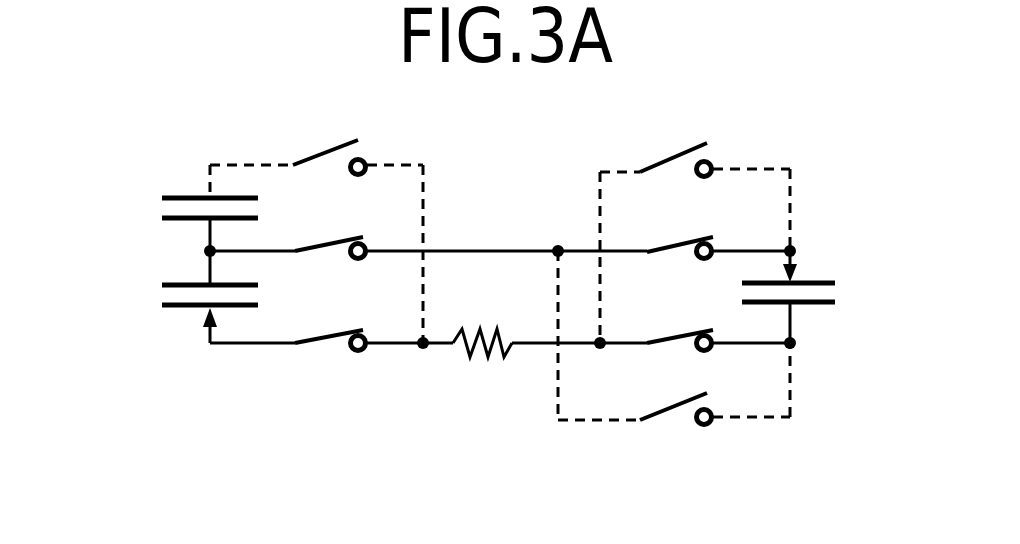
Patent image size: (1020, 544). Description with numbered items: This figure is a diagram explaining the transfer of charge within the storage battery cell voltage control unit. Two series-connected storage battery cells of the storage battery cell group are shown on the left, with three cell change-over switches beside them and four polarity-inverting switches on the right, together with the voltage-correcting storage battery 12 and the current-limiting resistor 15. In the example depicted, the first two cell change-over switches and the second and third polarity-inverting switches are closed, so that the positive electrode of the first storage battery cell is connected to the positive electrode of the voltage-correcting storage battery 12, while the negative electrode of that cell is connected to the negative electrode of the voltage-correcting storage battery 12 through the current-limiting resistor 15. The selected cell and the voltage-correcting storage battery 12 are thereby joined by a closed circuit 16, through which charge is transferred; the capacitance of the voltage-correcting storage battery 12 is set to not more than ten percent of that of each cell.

The voltage-correcting storage battery 12 is at (830, 292).
The current-limiting resistor 15 is at (490, 360).
The closed circuit 16 is at (503, 192).